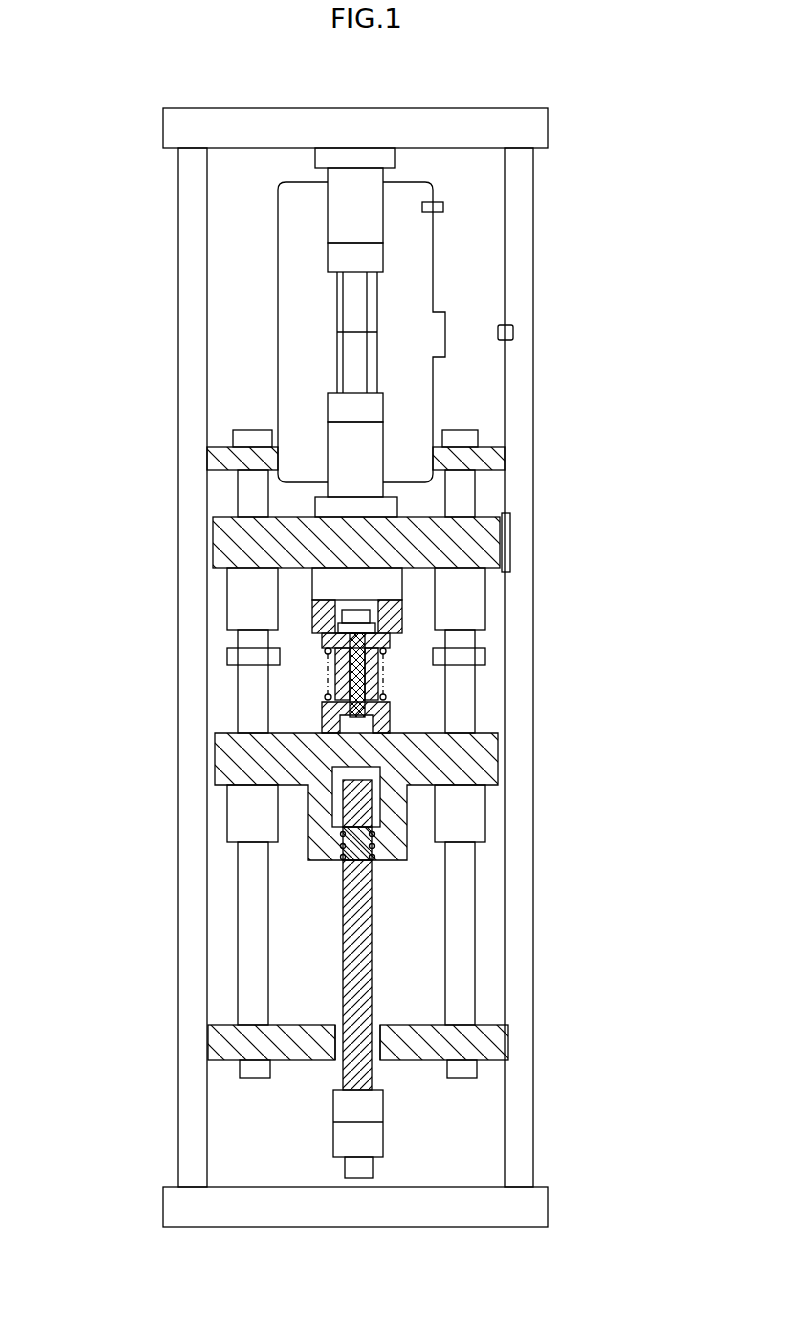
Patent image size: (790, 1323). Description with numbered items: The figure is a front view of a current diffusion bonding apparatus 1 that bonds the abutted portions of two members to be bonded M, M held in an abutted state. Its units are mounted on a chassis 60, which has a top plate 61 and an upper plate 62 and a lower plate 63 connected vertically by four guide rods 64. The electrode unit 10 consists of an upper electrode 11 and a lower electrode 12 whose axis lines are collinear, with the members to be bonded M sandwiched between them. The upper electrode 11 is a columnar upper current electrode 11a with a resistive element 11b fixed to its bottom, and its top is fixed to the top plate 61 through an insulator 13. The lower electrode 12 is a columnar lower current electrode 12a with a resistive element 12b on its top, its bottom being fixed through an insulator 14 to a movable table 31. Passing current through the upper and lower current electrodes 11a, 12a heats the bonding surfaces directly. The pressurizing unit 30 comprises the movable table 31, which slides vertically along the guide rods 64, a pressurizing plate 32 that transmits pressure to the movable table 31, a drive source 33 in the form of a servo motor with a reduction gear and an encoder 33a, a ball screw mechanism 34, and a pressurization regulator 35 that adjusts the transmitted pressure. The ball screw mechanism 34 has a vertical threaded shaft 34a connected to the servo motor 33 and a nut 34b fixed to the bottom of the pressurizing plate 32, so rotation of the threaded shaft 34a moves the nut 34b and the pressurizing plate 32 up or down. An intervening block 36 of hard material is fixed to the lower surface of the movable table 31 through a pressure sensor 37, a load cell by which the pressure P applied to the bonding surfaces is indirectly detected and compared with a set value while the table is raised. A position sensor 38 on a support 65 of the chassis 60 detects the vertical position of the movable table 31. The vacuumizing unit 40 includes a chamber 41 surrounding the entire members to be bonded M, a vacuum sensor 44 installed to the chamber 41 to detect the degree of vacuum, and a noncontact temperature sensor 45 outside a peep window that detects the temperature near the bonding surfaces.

The current diffusion bonding apparatus 1 is at (603, 97).
The electrode unit 10 is at (215, 244).
The upper electrode 11 is at (118, 152).
The upper current electrode 11a is at (350, 204).
The resistive element 11b is at (340, 256).
The lower electrode 12 is at (118, 348).
The lower current electrode 12a is at (343, 432).
The resistive element 12b is at (343, 408).
The insulator 13 is at (352, 152).
The insulator 14 is at (328, 512).
The members to be bonded M is at (345, 362).
The pressure P is at (360, 335).
The pressurizing unit 30 is at (147, 657).
The movable table 31 is at (225, 540).
The pressurizing plate 32 is at (230, 760).
The drive source 33 is at (343, 1140).
The encoder 33a is at (358, 1172).
The ball screw mechanism 34 is at (400, 875).
The threaded shaft 34a is at (350, 925).
The nut 34b is at (317, 848).
The pressurization regulator 35 is at (400, 675).
The intervening block 36 is at (398, 620).
The pressure sensor 37 is at (385, 585).
The position sensor 38 is at (512, 550).
The vacuumizing unit 40 is at (493, 237).
The chamber 41 is at (435, 275).
The vacuum sensor 44 is at (443, 207).
The temperature sensor 45 is at (513, 333).
The chassis 60 is at (552, 1128).
The top plate 61 is at (483, 118).
The upper plate 62 is at (490, 453).
The lower plate 63 is at (490, 1040).
The guide rods 64 is at (248, 988).
The support 65 is at (522, 873).